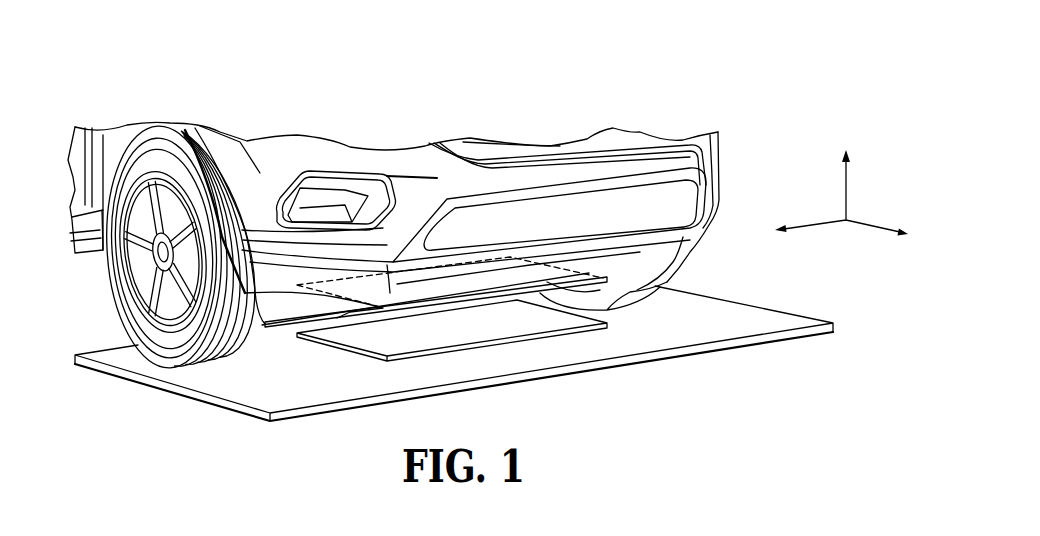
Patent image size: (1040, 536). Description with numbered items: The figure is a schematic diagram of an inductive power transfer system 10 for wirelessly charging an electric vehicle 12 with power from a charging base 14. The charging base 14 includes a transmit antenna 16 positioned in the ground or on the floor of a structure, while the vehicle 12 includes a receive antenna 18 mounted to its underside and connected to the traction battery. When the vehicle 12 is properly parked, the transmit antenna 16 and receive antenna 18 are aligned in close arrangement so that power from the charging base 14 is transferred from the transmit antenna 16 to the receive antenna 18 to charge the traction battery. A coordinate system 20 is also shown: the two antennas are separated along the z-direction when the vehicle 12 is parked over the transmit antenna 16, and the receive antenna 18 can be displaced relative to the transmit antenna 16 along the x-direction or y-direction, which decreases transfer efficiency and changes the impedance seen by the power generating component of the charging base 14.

The inductive power transfer system 10 is at (658, 86).
The electric vehicle 12 is at (191, 101).
The charging base 14 is at (197, 404).
The transmit antenna 16 is at (467, 331).
The receive antenna 18 is at (525, 293).
The coordinate system 20 is at (878, 197).